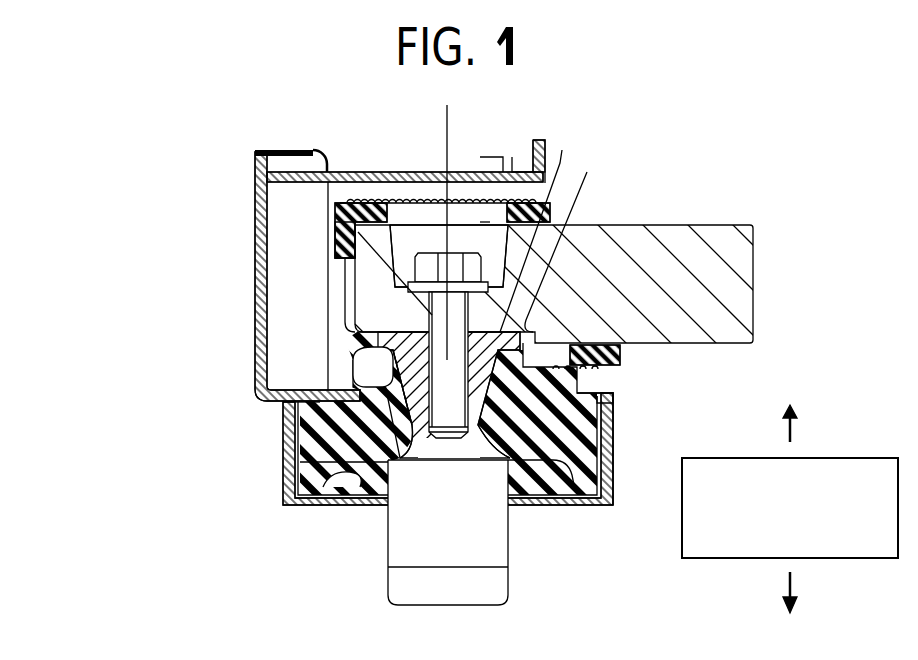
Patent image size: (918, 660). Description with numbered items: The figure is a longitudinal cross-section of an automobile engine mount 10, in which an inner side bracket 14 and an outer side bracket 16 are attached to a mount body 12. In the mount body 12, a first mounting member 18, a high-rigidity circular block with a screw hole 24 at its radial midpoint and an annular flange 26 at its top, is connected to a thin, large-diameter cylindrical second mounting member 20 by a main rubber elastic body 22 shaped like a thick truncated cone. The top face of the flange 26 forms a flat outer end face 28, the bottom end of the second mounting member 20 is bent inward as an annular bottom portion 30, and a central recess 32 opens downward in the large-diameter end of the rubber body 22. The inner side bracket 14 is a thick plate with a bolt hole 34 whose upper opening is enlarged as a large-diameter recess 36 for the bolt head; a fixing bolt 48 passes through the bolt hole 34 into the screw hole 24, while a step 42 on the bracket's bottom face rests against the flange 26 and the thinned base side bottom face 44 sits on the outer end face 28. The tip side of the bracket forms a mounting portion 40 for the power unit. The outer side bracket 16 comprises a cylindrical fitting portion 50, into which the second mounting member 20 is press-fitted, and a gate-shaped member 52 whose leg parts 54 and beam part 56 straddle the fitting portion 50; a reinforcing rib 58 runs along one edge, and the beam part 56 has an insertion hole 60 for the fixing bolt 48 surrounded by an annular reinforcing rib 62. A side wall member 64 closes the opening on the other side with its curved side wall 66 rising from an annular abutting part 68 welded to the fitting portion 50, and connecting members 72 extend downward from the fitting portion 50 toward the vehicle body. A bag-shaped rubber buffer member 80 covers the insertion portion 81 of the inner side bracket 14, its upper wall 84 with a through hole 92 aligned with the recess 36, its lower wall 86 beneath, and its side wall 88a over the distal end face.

The engine mount 10 is at (722, 140).
The mount body 12 is at (355, 368).
The inner side bracket 14 is at (626, 265).
The outer side bracket 16 is at (257, 250).
The first mounting member 18 is at (505, 398).
The second mounting member 20 is at (429, 477).
The main rubber elastic body 22 is at (383, 460).
The screw hole 24 is at (448, 278).
The flange 26 is at (372, 342).
The outer end face 28 is at (397, 330).
The bottom portion 30 is at (313, 498).
The central recess 32 is at (350, 482).
The bolt hole 34 is at (449, 221).
The large-diameter recess 36 is at (420, 252).
The mounting portion 40 is at (728, 290).
The step 42 is at (567, 241).
The base side bottom face 44 is at (541, 229).
The fixing bolt 48 is at (463, 533).
The fitting portion 50 is at (607, 506).
The gate-shaped member 52 is at (578, 212).
The leg part 54 is at (337, 292).
The beam part 56 is at (358, 178).
The reinforcing rib 58 is at (540, 142).
The insertion hole 60 is at (395, 165).
The reinforcing rib 62 is at (388, 167).
The side wall member 64 is at (283, 150).
The side wall 66 is at (260, 217).
The abutting part 68 is at (607, 397).
The connecting member 72 is at (512, 582).
The rubber buffer member 80 is at (632, 355).
The insertion portion 81 is at (347, 227).
The upper wall 84 is at (350, 242).
The lower wall 86 is at (603, 358).
The side wall 88a is at (337, 240).
The through hole 92 is at (491, 215).